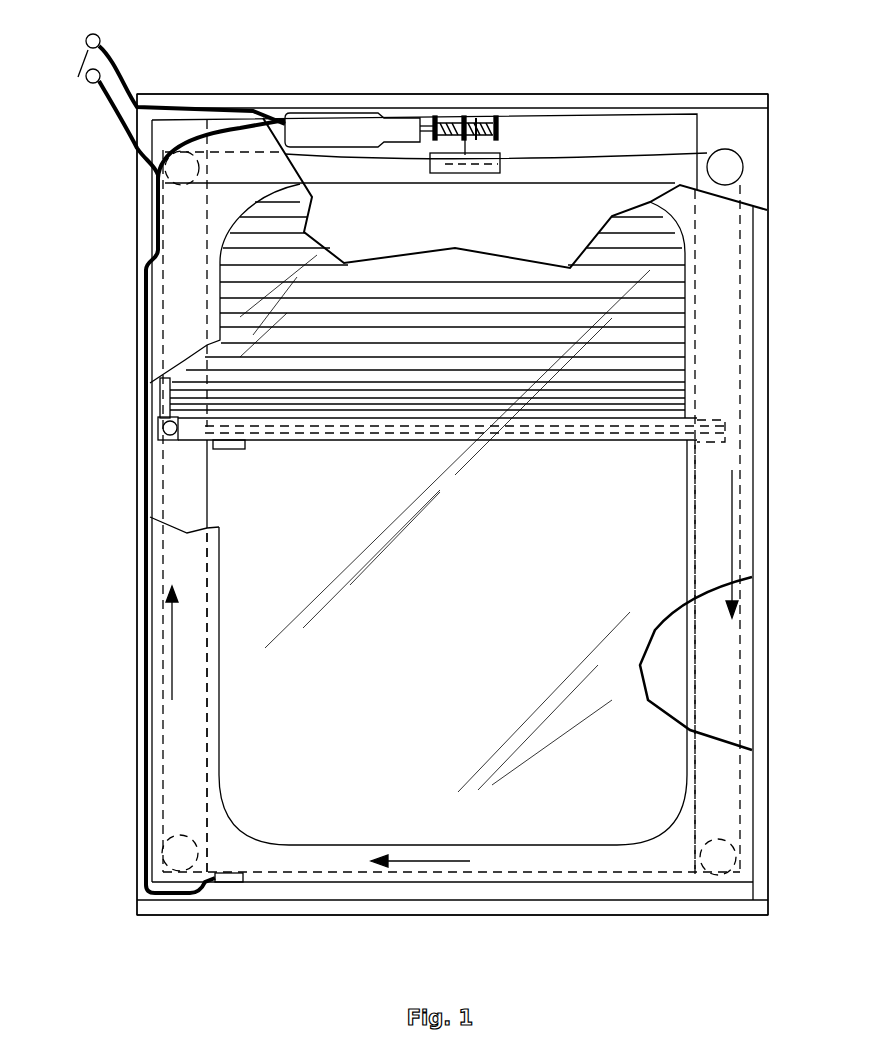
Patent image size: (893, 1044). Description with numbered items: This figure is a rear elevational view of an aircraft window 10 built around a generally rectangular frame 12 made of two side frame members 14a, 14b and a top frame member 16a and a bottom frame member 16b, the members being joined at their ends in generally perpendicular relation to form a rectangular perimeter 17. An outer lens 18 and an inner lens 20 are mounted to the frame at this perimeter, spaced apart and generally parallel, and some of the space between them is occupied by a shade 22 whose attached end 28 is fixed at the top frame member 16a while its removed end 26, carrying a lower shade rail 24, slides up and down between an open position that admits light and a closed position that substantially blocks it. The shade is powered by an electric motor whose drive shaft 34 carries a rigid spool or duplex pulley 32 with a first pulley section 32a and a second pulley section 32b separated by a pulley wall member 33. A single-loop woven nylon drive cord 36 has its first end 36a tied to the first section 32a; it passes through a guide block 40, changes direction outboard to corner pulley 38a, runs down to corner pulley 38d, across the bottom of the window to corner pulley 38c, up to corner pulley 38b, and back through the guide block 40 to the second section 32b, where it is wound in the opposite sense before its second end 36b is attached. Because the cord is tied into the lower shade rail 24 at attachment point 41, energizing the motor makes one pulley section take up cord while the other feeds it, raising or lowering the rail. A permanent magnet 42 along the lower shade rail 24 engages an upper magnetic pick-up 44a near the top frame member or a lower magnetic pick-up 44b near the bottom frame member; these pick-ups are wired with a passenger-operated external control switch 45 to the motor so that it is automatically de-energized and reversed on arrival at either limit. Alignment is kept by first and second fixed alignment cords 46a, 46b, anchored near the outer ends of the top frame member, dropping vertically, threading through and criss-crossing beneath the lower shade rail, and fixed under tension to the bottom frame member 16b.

The aircraft window 10 is at (115, 945).
The frame 12 is at (150, 740).
The side frame member 14a is at (137, 565).
The side frame member 14b is at (768, 565).
The top frame member 16a is at (240, 92).
The bottom frame member 16b is at (440, 916).
The rectangular perimeter 17 is at (137, 372).
The outer lens 18 is at (696, 663).
The inner lens 20 is at (418, 550).
The shade 22 is at (417, 301).
The lower shade rail 24 is at (505, 440).
The removed end 26 is at (418, 425).
The attached end 28 is at (466, 193).
The duplex pulley 32 is at (465, 105).
The first pulley section 32a is at (480, 118).
The second pulley section 32b is at (462, 118).
The pulley wall member 33 is at (462, 145).
The drive shaft 34 is at (427, 113).
The drive cord 36 is at (566, 155).
The first end 36a is at (497, 118).
The second end 36b is at (437, 118).
The corner pulley 38a is at (730, 158).
The corner pulley 38b is at (163, 179).
The corner pulley 38c is at (183, 842).
The corner pulley 38d is at (730, 840).
The guide block 40 is at (460, 173).
The attachment point 41 is at (178, 442).
The permanent magnet 42 is at (232, 450).
The magnetic pick-up 44a is at (160, 207).
The magnetic pick-up 44b is at (222, 883).
The external control switch 45 is at (78, 62).
The first fixed alignment cord 46a is at (219, 765).
The second fixed alignment cord 46b is at (693, 760).